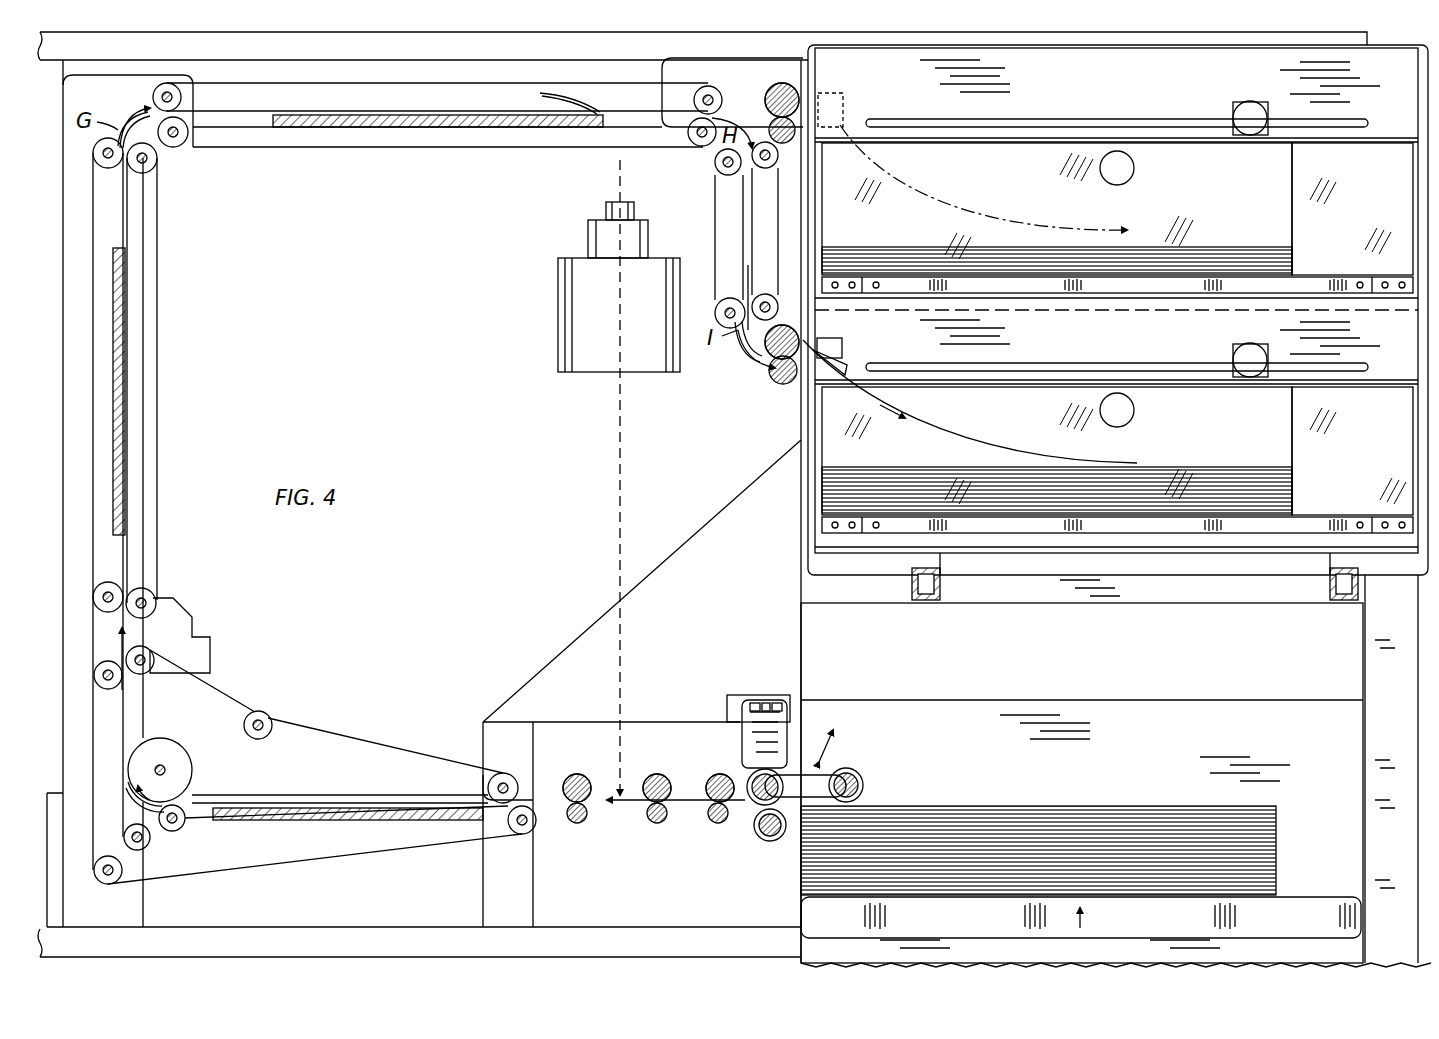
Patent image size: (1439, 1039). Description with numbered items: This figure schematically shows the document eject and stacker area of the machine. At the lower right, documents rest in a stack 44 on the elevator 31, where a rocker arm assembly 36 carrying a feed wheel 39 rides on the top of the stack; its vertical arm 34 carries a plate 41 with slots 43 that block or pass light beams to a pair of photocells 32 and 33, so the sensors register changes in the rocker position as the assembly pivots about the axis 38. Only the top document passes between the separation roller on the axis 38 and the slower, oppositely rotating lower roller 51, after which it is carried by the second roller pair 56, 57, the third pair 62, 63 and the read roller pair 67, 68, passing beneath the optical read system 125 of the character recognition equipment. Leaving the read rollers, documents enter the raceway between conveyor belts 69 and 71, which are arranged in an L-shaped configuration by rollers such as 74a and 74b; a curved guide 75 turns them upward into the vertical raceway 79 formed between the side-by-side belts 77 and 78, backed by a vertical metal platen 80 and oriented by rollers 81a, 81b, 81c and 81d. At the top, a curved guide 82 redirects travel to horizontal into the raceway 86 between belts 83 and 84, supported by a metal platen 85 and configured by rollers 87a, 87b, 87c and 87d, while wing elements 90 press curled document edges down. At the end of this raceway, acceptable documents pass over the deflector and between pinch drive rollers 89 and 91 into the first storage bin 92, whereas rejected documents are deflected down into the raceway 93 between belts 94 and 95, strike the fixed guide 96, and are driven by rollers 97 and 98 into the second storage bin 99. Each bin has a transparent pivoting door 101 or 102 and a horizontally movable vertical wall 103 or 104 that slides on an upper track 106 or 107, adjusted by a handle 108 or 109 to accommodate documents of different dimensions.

The elevator housing 31 is at (1198, 700).
The photocell 32 is at (777, 703).
The photocell 33 is at (750, 703).
The vertical arm 34 is at (745, 750).
The rocker arm assembly 36 is at (792, 740).
The axis 38 is at (752, 802).
The document feed wheel 39 is at (862, 776).
The vertical plate 41 is at (727, 703).
The slots 43 is at (766, 703).
The stack 44 is at (1196, 806).
The third roller 51 is at (765, 840).
The pinch roller 56 is at (710, 776).
The roller 57 is at (710, 823).
The idler pinch roller 62 is at (652, 774).
The drive roller 63 is at (650, 822).
The roller 67 is at (572, 774).
The roller 68 is at (574, 823).
The conveyor belt 69 is at (302, 748).
The conveyor belt 71 is at (280, 862).
The roller 74a is at (510, 776).
The roller 74b is at (525, 834).
The curved document guide 75 is at (122, 818).
The belt 77 is at (158, 502).
The belt 78 is at (95, 436).
The vertical raceway 79 is at (132, 332).
The vertical metal platen 80 is at (122, 478).
The roller 81a is at (152, 600).
The roller 81b is at (100, 606).
The roller 81c is at (93, 152).
The roller 81d is at (150, 162).
The curved guide 82 is at (128, 114).
The belt 83 is at (337, 148).
The belt 84 is at (318, 82).
The metal platen 85 is at (400, 128).
The raceway 86 is at (464, 128).
The roller 87a is at (182, 99).
The roller 87b is at (185, 142).
The roller 87c is at (694, 144).
The roller 87d is at (706, 86).
The pinch drive roller 89 is at (798, 92).
The wing elements 90 is at (588, 101).
The pinch drive roller 91 is at (796, 128).
The first storage bin 92 is at (1430, 182).
The raceway 93 is at (750, 216).
The belt 94 is at (715, 252).
The belt 95 is at (770, 196).
The fixed guide 96 is at (746, 356).
The drive pinch roller 97 is at (785, 330).
The drive pinch roller 98 is at (782, 384).
The second storage bin 99 is at (1430, 455).
The door 101 is at (1163, 185).
The door 102 is at (1165, 427).
The vertical wall member 103 is at (1294, 212).
The vertical wall member 104 is at (1294, 463).
The track element 106 is at (1082, 125).
The track element 107 is at (1096, 368).
The handle 108 is at (1252, 102).
The handle 109 is at (1236, 352).
The optical read system 125 is at (558, 326).